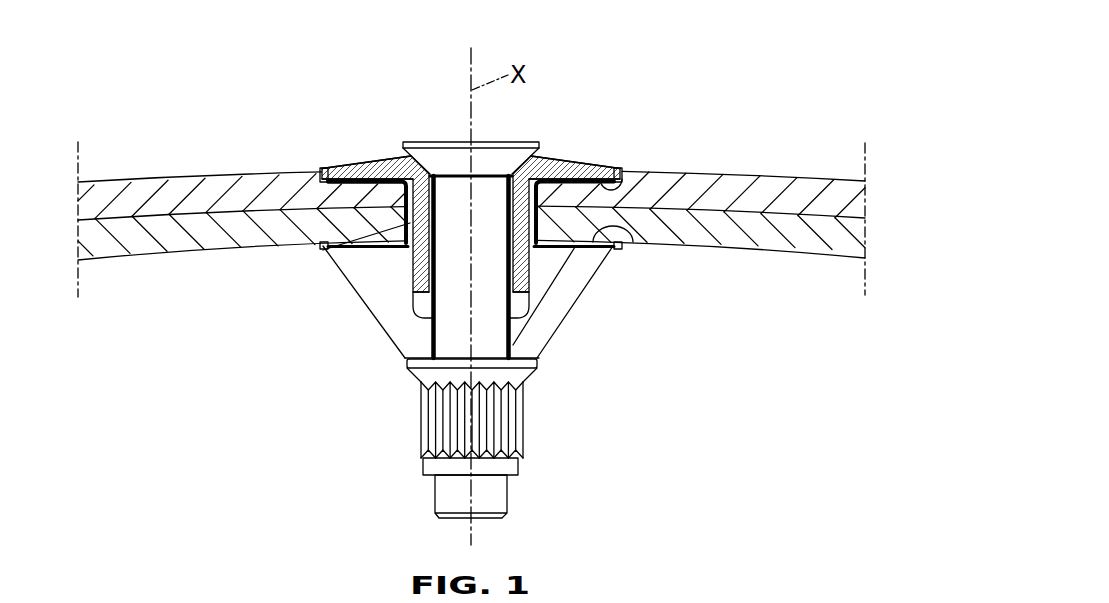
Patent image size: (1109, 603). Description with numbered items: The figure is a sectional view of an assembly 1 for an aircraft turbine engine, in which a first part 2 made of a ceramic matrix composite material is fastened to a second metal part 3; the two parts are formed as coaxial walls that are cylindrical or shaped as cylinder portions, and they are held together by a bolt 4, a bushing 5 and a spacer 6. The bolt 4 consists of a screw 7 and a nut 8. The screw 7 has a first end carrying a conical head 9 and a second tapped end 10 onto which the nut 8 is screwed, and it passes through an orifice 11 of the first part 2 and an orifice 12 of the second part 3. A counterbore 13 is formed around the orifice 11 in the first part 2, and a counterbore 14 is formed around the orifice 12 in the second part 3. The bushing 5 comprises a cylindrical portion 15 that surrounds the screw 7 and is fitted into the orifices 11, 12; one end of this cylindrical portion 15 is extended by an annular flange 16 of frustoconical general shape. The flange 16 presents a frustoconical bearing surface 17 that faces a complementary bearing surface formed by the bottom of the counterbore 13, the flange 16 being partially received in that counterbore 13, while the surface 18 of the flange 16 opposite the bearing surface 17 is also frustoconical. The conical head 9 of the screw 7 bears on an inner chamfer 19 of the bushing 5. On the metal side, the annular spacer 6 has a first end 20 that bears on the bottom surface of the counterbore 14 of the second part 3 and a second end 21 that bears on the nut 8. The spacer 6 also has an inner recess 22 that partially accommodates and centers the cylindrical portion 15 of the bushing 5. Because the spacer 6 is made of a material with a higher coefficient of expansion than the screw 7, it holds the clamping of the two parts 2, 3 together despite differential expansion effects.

The assembly 1 is at (727, 70).
The first part 2 is at (778, 193).
The second part 3 is at (772, 238).
The bolt 4 is at (494, 378).
The bushing 5 is at (455, 238).
The spacer 6 is at (560, 327).
The screw 7 is at (471, 214).
The nut 8 is at (432, 418).
The conical head 9 is at (447, 157).
The tapped end 10 is at (493, 498).
The orifice of the first part 11 is at (393, 183).
The orifice of the second part 12 is at (323, 250).
The counterbore 13 is at (620, 175).
The counterbore 14 is at (638, 248).
The cylindrical portion 15 is at (422, 268).
The annular flange 16 is at (565, 172).
The frustoconical bearing surface 17 is at (560, 168).
The surface of the flange 18 is at (548, 158).
The inner chamfer 19 is at (403, 160).
The first end 20 is at (573, 247).
The second end 21 is at (528, 352).
The inner recess 22 is at (423, 302).